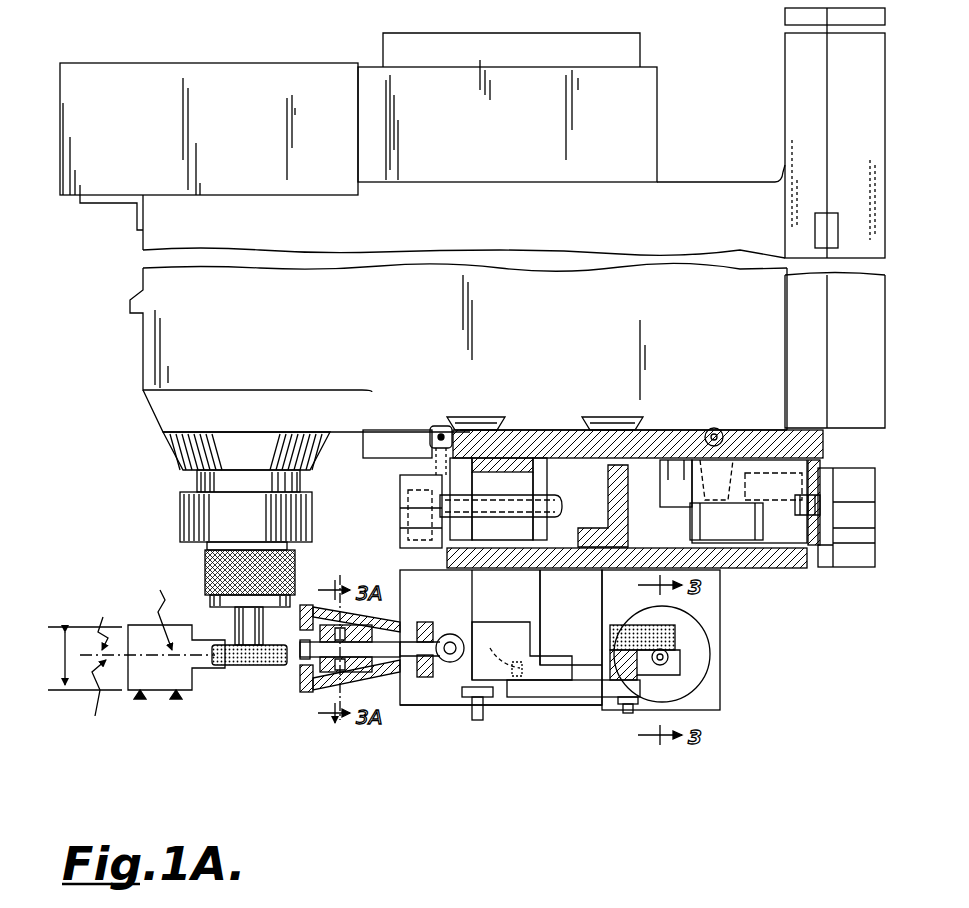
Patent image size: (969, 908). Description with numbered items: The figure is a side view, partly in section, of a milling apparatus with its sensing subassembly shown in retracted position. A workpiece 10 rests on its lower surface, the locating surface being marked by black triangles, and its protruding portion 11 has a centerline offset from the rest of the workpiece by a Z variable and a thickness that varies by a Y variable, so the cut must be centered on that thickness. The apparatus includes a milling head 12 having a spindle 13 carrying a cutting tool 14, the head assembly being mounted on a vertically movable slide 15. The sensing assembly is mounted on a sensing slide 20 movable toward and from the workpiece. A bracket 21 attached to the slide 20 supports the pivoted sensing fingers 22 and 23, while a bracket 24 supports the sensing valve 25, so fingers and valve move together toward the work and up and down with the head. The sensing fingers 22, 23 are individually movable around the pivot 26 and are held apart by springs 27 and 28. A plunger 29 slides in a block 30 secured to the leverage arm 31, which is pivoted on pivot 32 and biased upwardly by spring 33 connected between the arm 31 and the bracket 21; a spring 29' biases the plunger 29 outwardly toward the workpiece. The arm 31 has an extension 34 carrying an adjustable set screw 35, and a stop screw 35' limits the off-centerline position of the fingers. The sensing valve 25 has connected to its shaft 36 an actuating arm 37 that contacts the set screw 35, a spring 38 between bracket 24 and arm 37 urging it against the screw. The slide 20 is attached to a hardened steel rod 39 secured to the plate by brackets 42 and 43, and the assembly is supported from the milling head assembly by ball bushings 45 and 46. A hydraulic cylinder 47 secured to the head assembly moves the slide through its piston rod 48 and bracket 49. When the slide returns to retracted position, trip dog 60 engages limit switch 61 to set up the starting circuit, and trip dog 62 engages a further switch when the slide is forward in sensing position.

The workpiece 10 is at (178, 700).
The protruding portion 11 is at (203, 680).
The milling head 12 is at (165, 330).
The spindle 13 is at (207, 578).
The cutting tool 14 is at (237, 636).
The vertically movable slide 15 is at (828, 305).
The sensing slide 20 is at (750, 572).
The bracket 21 is at (440, 708).
The sensing finger 22 is at (318, 605).
The sensing finger 23 is at (318, 684).
The bracket 24 is at (705, 697).
The sensing valve 25 is at (695, 661).
The pivot 26 is at (368, 668).
The spring 27 is at (330, 610).
The spring 28 is at (302, 692).
The plunger 29 is at (320, 670).
The spring 29' is at (423, 621).
The block 30 is at (398, 640).
The leverage arm 31 is at (550, 656).
The pivot 32 is at (453, 645).
The spring 33 is at (523, 666).
The extension 34 is at (593, 697).
The set screw 35 is at (617, 728).
The stop screw 35' is at (474, 728).
The shaft 36 is at (685, 650).
The actuating arm 37 is at (620, 632).
The spring 38 is at (615, 642).
The hardened steel rod 39 is at (555, 506).
The bracket 42 is at (400, 488).
The bracket 43 is at (856, 482).
The ball bushing 45 is at (722, 522).
The ball bushing 46 is at (512, 468).
The hydraulic cylinder 47 is at (750, 470).
The piston rod 48 is at (668, 460).
The bracket 49 is at (628, 506).
The trip dog 60 is at (472, 420).
The limit switch 61 is at (440, 428).
The trip dog 62 is at (608, 418).